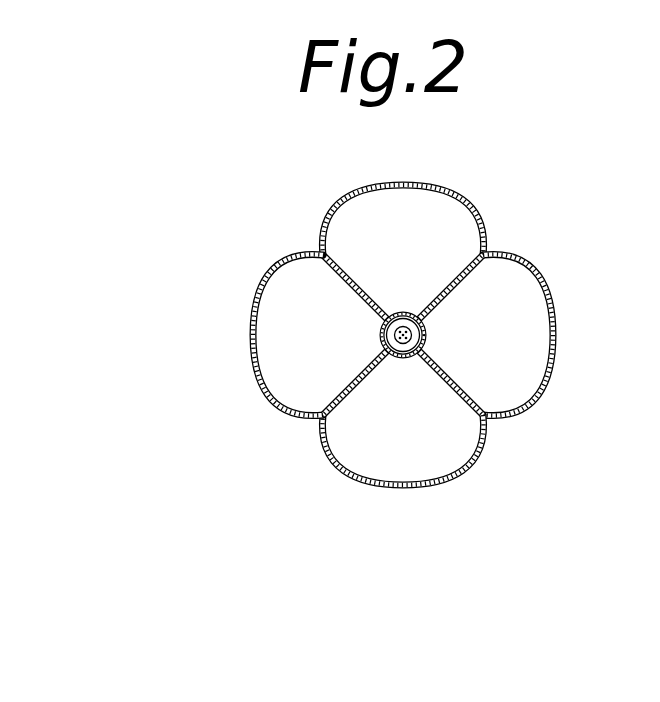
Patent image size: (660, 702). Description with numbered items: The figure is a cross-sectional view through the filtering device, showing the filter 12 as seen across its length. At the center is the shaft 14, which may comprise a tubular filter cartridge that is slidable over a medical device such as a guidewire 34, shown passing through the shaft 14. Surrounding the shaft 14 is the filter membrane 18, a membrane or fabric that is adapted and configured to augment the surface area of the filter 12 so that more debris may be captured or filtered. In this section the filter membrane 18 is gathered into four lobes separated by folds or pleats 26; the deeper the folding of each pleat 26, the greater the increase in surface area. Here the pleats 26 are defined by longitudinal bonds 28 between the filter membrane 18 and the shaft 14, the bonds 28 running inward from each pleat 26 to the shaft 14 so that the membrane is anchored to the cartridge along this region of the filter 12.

The filter 12 is at (218, 322).
The shaft 14 is at (426, 429).
The filter membrane 18 is at (466, 197).
The pleat 26 is at (308, 222).
The longitudinal bond 28 is at (383, 336).
The guidewire 34 is at (411, 339).